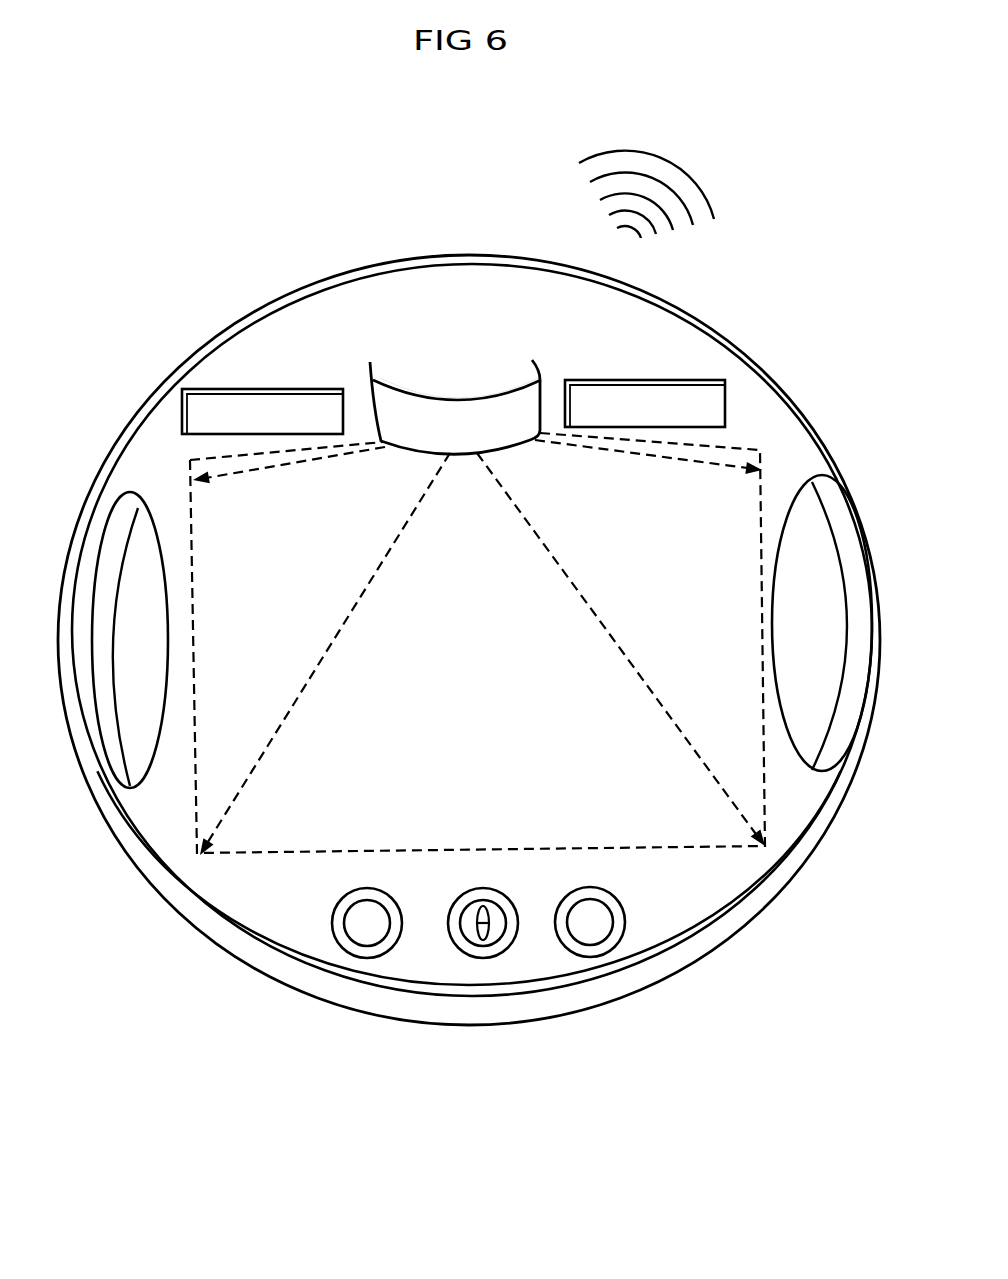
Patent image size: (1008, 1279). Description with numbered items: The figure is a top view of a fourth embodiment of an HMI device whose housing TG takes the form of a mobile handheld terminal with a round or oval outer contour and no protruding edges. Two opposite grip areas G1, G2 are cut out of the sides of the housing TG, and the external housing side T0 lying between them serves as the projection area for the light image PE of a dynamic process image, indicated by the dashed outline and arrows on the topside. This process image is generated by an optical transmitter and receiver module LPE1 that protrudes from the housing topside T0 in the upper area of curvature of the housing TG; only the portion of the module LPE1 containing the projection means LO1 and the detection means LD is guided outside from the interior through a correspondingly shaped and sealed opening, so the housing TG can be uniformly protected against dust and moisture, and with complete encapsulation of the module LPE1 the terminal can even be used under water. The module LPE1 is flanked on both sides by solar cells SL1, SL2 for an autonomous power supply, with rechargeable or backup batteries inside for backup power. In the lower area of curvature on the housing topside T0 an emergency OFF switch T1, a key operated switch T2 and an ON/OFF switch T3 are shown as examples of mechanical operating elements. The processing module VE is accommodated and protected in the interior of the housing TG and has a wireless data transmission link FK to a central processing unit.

The processing module VE is at (688, 352).
The housing TG is at (260, 915).
The grip area G1 is at (128, 752).
The grip area G2 is at (803, 733).
The solar cell SL1 is at (213, 417).
The solar cell SL2 is at (708, 405).
The optical transmitter and receiver module LPE1 is at (371, 417).
The projection means LO1 is at (408, 312).
The detection means LD is at (490, 312).
The light image PE is at (728, 507).
The external housing side T0 is at (298, 815).
The emergency OFF switch T1 is at (363, 953).
The key operated switch T2 is at (482, 948).
The ON/OFF switch T3 is at (595, 948).
The wireless data transmission link FK is at (703, 183).